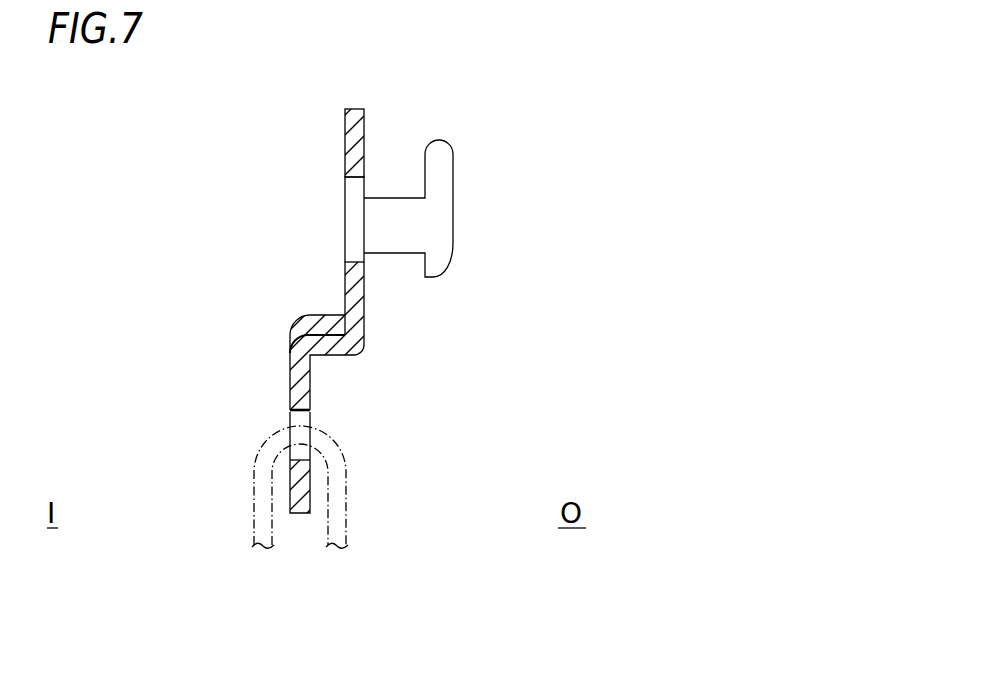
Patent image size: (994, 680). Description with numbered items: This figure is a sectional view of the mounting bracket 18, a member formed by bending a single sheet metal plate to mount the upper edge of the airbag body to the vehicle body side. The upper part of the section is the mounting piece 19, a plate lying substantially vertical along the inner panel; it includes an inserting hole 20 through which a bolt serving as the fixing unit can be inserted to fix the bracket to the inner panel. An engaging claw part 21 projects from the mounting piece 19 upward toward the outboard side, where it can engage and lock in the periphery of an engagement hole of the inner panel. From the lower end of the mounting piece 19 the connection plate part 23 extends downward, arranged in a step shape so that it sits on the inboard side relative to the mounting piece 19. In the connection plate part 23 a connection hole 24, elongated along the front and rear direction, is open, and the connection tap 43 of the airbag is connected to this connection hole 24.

The mounting bracket 18 is at (505, 145).
The mounting piece 19 is at (358, 122).
The inserting hole 20 is at (355, 219).
The engaging claw part 21 is at (453, 197).
The connection plate part 23 is at (290, 373).
The connection hole 24 is at (302, 422).
The connection tap 43 is at (347, 507).